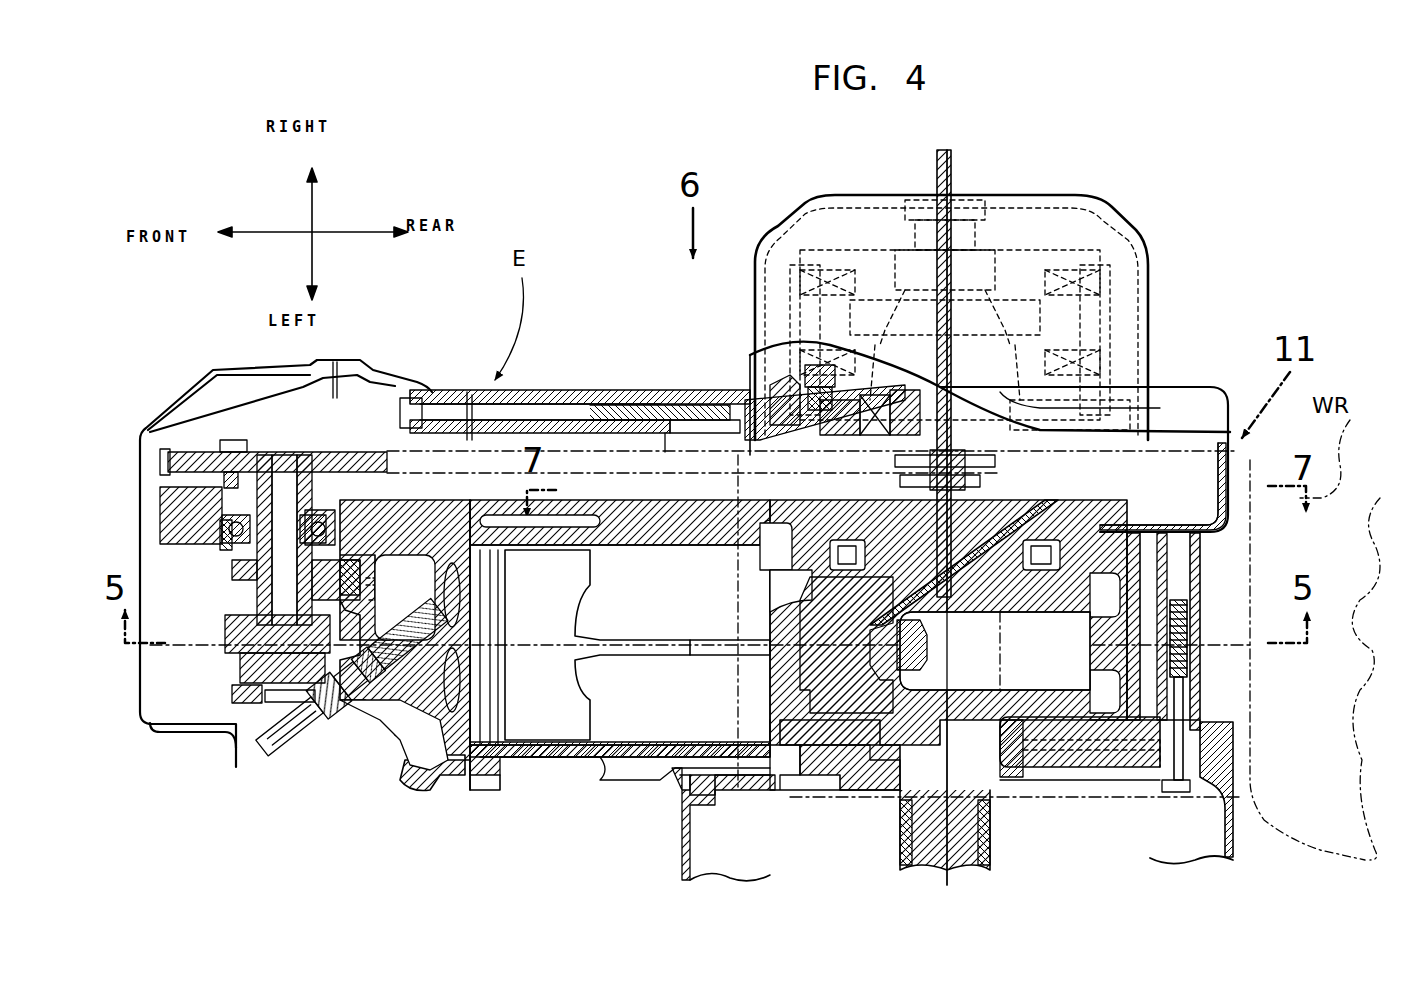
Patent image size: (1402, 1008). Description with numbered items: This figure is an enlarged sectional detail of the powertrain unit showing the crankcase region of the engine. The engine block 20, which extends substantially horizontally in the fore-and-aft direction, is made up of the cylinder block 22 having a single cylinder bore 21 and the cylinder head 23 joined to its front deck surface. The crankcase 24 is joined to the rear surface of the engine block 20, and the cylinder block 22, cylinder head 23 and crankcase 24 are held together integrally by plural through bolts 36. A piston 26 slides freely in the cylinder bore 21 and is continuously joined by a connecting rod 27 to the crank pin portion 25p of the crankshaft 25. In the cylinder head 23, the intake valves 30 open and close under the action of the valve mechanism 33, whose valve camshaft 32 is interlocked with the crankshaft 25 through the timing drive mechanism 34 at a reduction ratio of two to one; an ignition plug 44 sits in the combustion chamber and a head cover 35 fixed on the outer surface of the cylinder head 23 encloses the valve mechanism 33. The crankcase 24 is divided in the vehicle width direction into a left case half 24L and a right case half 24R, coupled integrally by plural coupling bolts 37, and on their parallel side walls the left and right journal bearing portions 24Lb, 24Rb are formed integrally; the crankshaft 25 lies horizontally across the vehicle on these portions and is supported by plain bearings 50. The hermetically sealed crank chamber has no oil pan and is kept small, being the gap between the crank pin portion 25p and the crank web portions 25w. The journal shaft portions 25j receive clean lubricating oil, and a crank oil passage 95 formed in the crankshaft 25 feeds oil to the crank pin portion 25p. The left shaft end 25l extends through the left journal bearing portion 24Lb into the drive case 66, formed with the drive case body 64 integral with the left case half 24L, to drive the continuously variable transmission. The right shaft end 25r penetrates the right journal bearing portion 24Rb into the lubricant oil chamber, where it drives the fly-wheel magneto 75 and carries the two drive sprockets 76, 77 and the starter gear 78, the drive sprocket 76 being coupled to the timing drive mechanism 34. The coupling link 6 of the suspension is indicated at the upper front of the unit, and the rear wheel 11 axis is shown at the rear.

The coupling link 6 is at (916, 311).
The wheel rotation axis / rear wheel 11 is at (1025, 437).
The engine block 20 is at (562, 850).
The cylinder bore 21 is at (615, 745).
The cylinder block 22 is at (562, 780).
The cylinder head 23 is at (418, 785).
The crankcase 24 is at (1322, 650).
The right case half 24R is at (1200, 607).
The left case half 24L is at (1200, 722).
The right journal bearing portion 24Rb is at (880, 520).
The left journal bearing portion 24Lb is at (820, 790).
The crankshaft 25 is at (895, 855).
The right shaft end 25r is at (985, 390).
The journal shaft portion 25j is at (895, 500).
The left shaft end 25l is at (990, 850).
The crank pin portion 25p is at (790, 612).
The crank web portion 25w is at (1095, 618).
The piston 26 is at (556, 620).
The connecting rod 27 is at (626, 632).
The intake valve 30 is at (465, 595).
The valve camshaft 32 is at (256, 556).
The valve mechanism 33 is at (232, 552).
The timing drive mechanism 34 is at (397, 445).
The head cover 35 is at (185, 738).
The through bolt 36 is at (566, 392).
The coupling bolt 37 is at (1178, 793).
The ignition plug 44 is at (300, 745).
The plain bearing 50 is at (1010, 520).
The drive case body 64 is at (680, 822).
The drive case 66 is at (678, 845).
The fly-wheel magneto 75 is at (768, 382).
The drive sprocket 76 is at (1000, 462).
The drive sprocket 77 is at (985, 482).
The starter gear 78 is at (750, 392).
The crank oil passage 95 is at (930, 628).